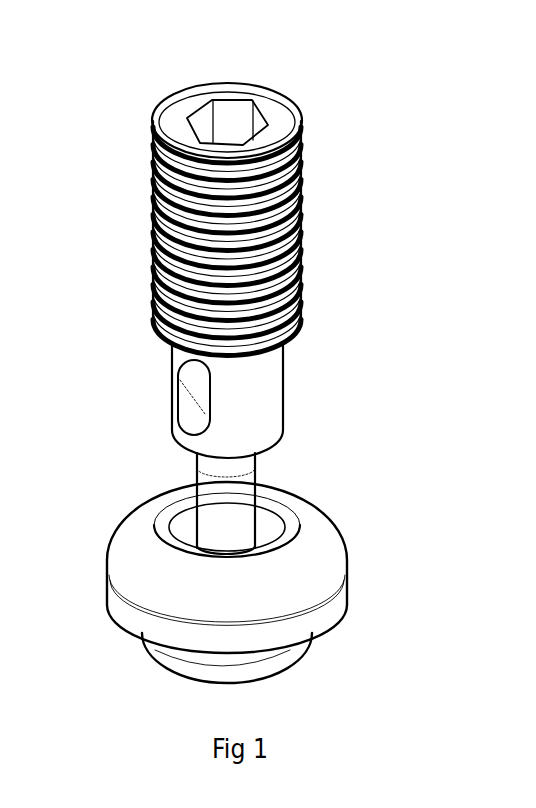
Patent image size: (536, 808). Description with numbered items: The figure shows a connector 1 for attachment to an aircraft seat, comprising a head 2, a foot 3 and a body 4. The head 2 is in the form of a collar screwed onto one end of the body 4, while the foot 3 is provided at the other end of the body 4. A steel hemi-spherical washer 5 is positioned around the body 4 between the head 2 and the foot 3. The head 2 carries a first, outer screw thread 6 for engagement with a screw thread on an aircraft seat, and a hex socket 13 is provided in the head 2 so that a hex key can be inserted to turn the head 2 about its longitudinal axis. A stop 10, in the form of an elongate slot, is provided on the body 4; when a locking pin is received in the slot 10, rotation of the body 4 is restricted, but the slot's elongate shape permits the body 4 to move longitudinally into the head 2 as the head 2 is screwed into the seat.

The connector 1 is at (338, 92).
The head 2 is at (123, 98).
The foot 3 is at (290, 657).
The body 4 is at (243, 497).
The hemi-spherical washer 5 is at (135, 532).
The first (outer) screw thread 6 is at (297, 215).
The stop 10 is at (187, 404).
The hex socket 13 is at (235, 118).